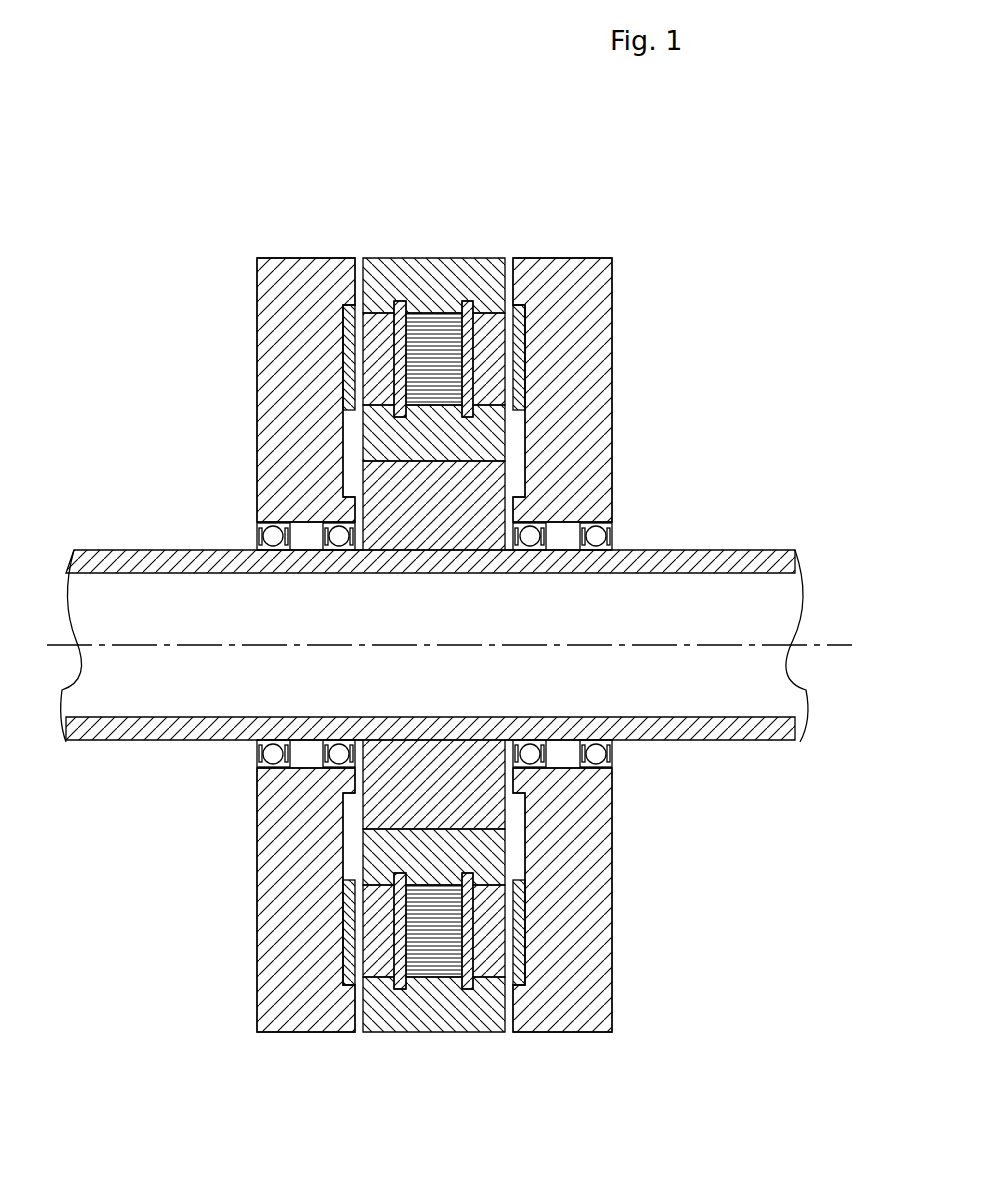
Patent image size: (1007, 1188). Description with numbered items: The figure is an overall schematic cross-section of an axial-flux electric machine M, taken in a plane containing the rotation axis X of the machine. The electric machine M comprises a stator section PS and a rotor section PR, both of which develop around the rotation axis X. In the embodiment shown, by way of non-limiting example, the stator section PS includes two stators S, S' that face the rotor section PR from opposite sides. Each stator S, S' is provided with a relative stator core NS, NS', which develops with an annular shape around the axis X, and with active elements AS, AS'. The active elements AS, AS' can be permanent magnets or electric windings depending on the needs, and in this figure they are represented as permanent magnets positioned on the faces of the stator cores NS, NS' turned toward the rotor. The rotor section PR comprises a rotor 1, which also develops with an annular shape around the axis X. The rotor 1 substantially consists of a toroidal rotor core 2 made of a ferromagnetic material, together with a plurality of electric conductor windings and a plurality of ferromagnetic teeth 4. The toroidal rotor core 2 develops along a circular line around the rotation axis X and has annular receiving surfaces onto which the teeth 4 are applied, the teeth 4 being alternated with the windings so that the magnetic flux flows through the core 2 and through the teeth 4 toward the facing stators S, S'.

The axial-flux electric machine M is at (303, 157).
The stator section PS is at (236, 257).
The stator core NS is at (245, 645).
The stator S is at (268, 645).
The stator active element AS is at (301, 660).
The stator core NS' is at (627, 645).
The stator S' is at (608, 645).
The stator active element AS' is at (629, 661).
The rotor section PR is at (476, 247).
The rotor 1 is at (405, 256).
The toroidal rotor core 2 is at (437, 350).
The teeth 4 is at (490, 345).
The rotation axis X is at (826, 640).